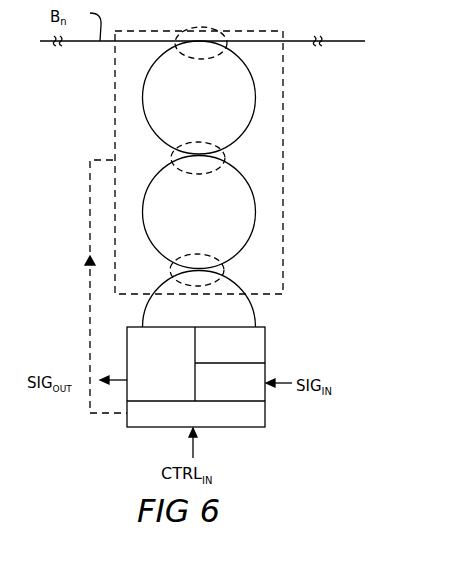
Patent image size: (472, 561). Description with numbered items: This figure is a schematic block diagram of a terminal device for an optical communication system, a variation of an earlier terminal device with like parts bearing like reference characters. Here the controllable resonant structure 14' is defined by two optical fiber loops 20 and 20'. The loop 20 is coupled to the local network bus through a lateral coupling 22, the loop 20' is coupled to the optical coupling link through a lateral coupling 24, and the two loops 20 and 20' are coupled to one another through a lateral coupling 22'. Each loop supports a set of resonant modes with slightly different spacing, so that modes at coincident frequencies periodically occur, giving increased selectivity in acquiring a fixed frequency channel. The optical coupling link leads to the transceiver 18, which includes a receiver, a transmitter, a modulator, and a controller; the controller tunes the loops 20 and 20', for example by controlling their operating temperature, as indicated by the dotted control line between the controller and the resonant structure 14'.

The resonant structure 14' is at (226, 162).
The optical fiber loop 20 is at (229, 97).
The optical fiber loop 20' is at (233, 212).
The lateral coupling 22 is at (233, 33).
The lateral coupling 22' is at (195, 144).
The lateral coupling 24 is at (197, 255).
The transceiver 18 is at (265, 427).